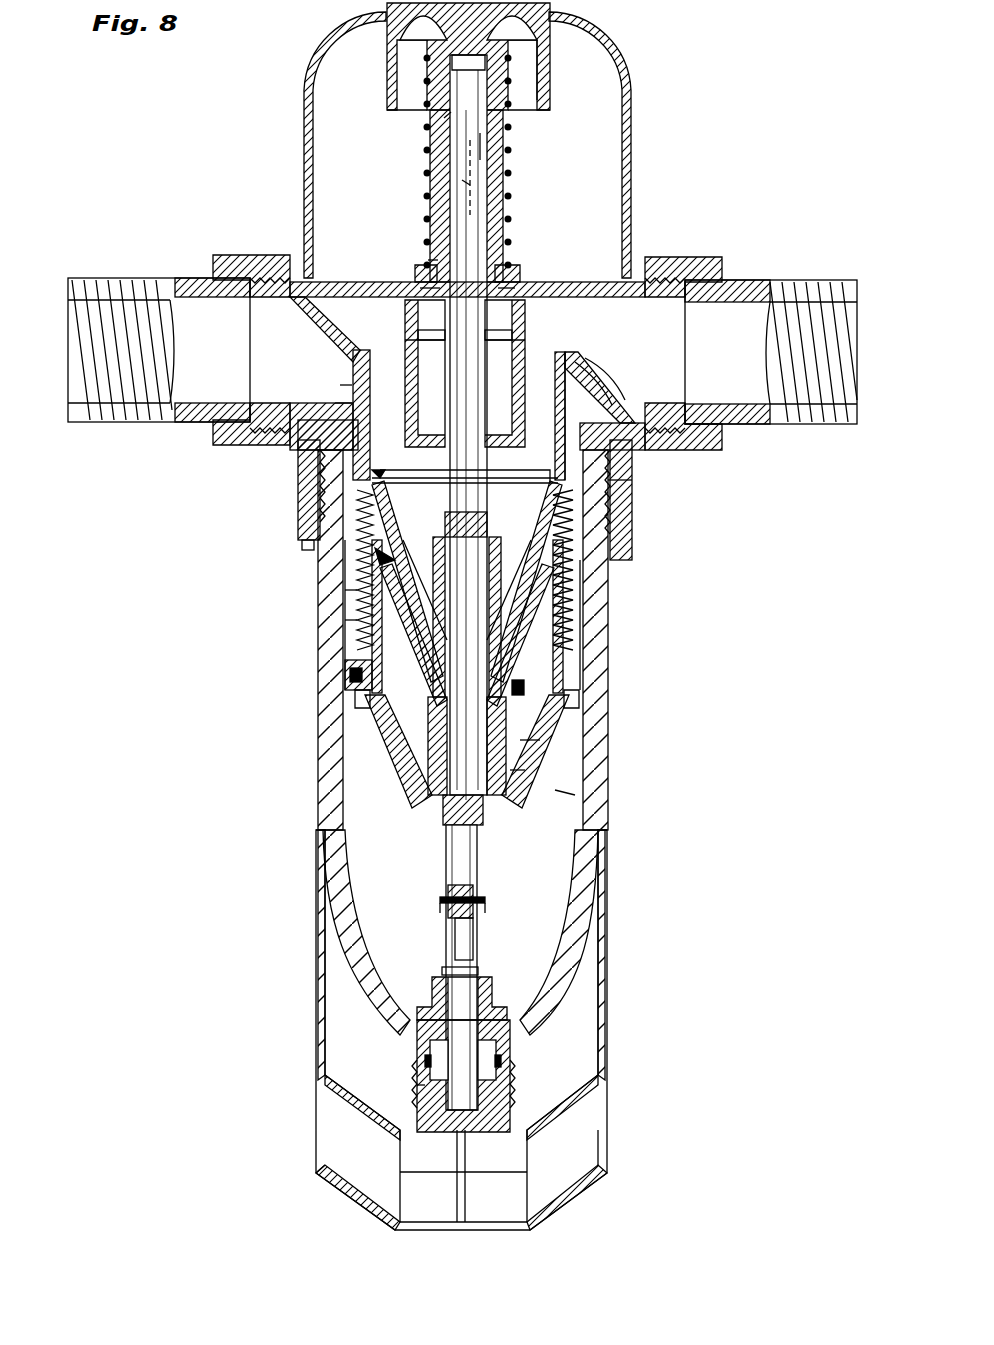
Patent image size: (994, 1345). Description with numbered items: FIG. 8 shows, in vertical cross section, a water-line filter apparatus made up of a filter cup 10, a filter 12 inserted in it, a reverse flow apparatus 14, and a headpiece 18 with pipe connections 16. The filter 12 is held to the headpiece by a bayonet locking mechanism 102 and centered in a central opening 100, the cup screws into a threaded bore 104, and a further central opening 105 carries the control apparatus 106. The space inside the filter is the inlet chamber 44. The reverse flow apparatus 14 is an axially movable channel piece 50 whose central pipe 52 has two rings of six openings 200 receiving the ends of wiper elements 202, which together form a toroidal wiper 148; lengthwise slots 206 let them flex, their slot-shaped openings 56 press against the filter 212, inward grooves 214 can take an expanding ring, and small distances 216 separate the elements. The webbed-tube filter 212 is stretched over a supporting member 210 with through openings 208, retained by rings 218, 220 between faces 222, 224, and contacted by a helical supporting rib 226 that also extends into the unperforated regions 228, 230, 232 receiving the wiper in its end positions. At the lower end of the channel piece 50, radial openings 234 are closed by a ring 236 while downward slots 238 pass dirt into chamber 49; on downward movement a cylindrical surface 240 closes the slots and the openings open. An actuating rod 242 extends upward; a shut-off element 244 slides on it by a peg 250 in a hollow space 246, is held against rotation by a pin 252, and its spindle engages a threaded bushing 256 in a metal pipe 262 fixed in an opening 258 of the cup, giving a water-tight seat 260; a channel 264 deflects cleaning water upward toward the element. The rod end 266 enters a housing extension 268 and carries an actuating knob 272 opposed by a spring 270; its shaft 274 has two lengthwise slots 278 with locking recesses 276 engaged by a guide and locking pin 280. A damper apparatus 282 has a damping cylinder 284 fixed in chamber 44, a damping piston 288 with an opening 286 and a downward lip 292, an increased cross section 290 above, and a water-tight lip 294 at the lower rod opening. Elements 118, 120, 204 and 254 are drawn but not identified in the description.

The filter cup 10 is at (318, 792).
The filter 12 is at (345, 640).
The reverse flow apparatus 14 is at (600, 650).
The pipe connections 16 is at (265, 272).
The headpiece 18 is at (665, 270).
The inlet chamber 44 is at (585, 398).
The chamber 49 is at (600, 840).
The channel piece 50 is at (360, 780).
The central pipe 52 is at (580, 705).
The slot-shaped openings 56 is at (610, 560).
The central opening 100 is at (350, 375).
The bayonet locking mechanism 102 is at (630, 460).
The threaded bore 104 is at (300, 522).
The central opening 105 is at (505, 275).
The control apparatus 106 is at (555, 96).
The bottom cap 118 is at (318, 1185).
The bottom shell 120 is at (590, 1130).
The toroidal wiper 148 is at (355, 455).
The openings 200 is at (357, 700).
The wiper elements 202 is at (560, 500).
The spring 204 is at (355, 510).
The lengthwise slots 206 is at (528, 688).
The through openings 208 is at (357, 622).
The supporting member 210 is at (372, 660).
The filter 212 is at (565, 625).
The grooves 214 is at (355, 478).
The small distances 216 is at (445, 492).
The ring 218 is at (348, 385).
The ring 220 is at (520, 770).
The face 222 is at (612, 490).
The face 224 is at (560, 790).
The helical supporting rib 226 is at (308, 545).
The region 228 is at (563, 432).
The region 230 is at (345, 595).
The region 232 is at (355, 685).
The radial openings 234 is at (505, 810).
The ring 236 is at (425, 808).
The downward through slots 238 is at (430, 800).
The cylindrical surface 240 is at (540, 740).
The actuating rod 242 is at (490, 255).
The shut-off element 244 is at (505, 1020).
The hollow space 246 is at (460, 857).
The peg 250 is at (475, 935).
The pin 252 is at (485, 898).
The bushing 254 is at (450, 1035).
The threaded bushing 256 is at (428, 1060).
The opening 258 is at (425, 1085).
The water-tight seat 260 is at (418, 1012).
The metal pipe 262 is at (500, 1100).
The channel 264 is at (560, 1010).
The end of actuating rod 266 is at (480, 133).
The extension 268 is at (627, 170).
The spring 270 is at (510, 160).
The actuating knob 272 is at (555, 70).
The shaft 274 is at (437, 160).
The locking recess 276 is at (430, 112).
The lengthwise slots 278 is at (465, 185).
The guide and locking pin 280 is at (447, 120).
The damper apparatus 282 is at (405, 365).
The damping cylinder 284 is at (515, 395).
The opening 286 is at (430, 265).
The damping piston 288 is at (425, 290).
The increased cross section 290 is at (525, 345).
The annular water-tight lip 292 is at (400, 338).
The water-tight lip 294 is at (340, 403).